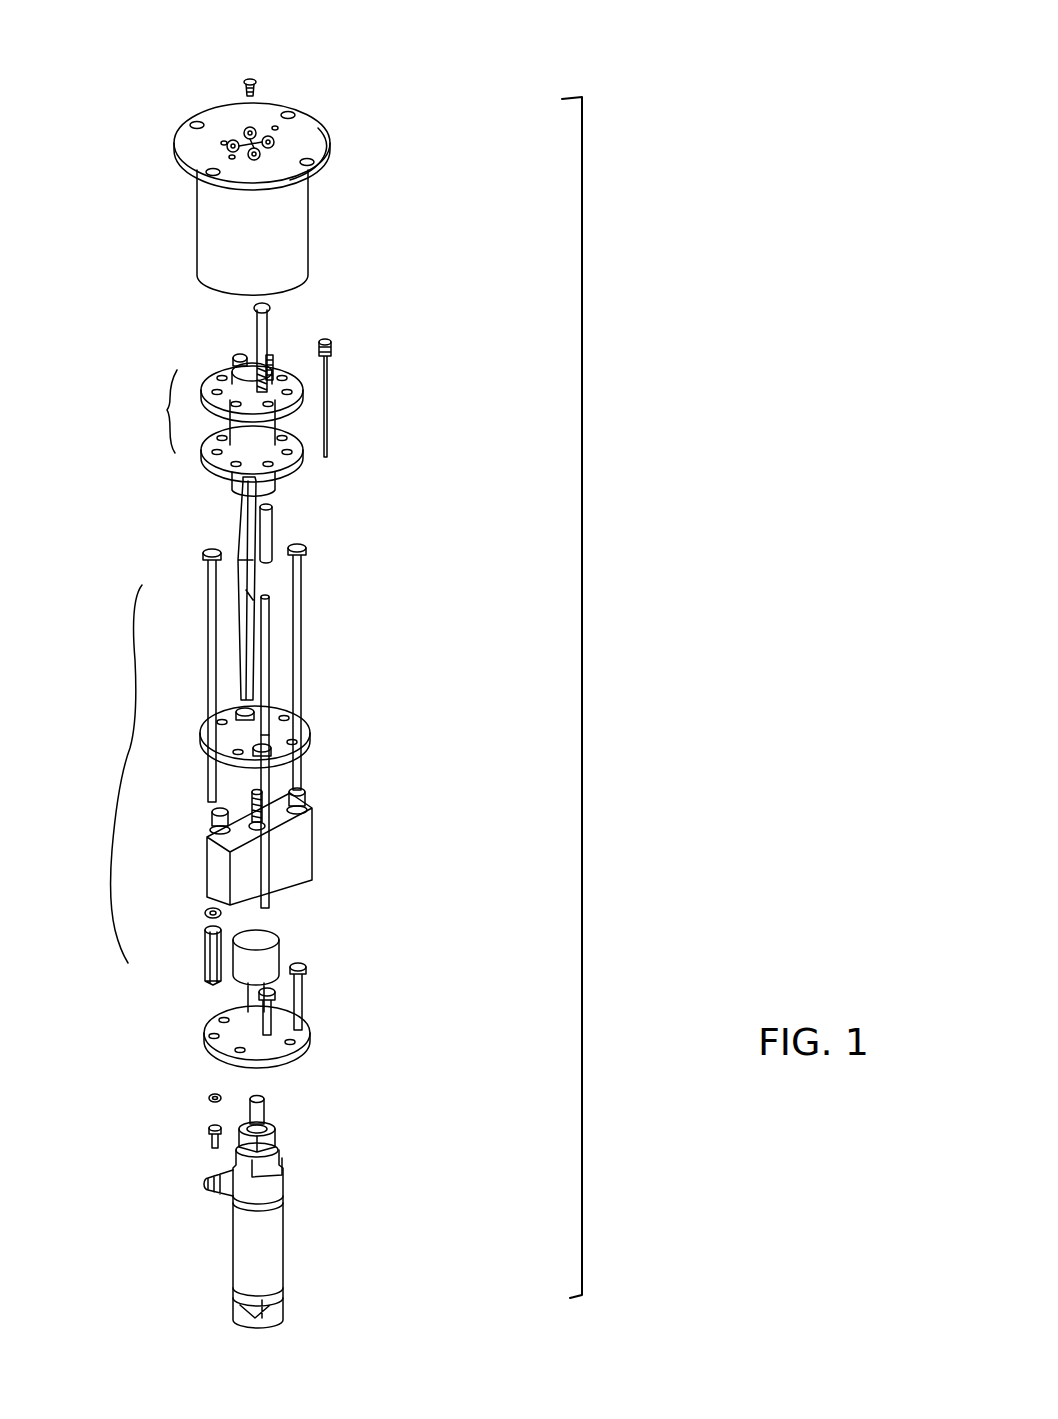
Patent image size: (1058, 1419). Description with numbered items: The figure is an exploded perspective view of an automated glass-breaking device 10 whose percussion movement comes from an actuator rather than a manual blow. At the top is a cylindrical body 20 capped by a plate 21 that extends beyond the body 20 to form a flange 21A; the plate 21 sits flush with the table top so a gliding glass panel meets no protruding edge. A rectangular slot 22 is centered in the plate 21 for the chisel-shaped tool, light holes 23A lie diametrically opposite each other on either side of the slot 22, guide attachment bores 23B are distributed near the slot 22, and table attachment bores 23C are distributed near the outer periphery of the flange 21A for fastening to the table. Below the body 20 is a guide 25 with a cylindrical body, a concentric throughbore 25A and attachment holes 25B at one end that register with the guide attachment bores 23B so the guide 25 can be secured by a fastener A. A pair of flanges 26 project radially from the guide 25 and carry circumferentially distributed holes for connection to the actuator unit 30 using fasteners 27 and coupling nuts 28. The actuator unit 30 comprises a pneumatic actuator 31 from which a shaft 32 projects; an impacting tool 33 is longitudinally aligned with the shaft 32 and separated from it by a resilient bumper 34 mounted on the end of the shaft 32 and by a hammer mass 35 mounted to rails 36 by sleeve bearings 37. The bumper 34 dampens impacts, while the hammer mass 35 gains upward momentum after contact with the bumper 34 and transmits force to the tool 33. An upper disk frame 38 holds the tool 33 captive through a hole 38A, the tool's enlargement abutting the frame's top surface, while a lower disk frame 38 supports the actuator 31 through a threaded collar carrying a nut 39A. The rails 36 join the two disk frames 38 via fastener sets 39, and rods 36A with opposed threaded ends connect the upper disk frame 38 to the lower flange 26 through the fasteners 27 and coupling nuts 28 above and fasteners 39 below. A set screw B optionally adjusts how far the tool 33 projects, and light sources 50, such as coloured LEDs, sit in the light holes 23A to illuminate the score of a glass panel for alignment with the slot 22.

The glass-breaking device 10 is at (584, 714).
The fastener A is at (252, 77).
The body 20 is at (308, 222).
The plate 21 is at (293, 150).
The flange 21A is at (330, 123).
The slot 22 is at (260, 133).
The light holes 23A is at (230, 160).
The guide attachment bores 23B is at (233, 127).
The table attachment bores 23C is at (200, 177).
The guide 25 is at (164, 408).
The throughbore 25A is at (237, 368).
The attachment holes 25B is at (280, 370).
The flanges 26 is at (203, 450).
The fasteners 27 is at (273, 310).
The coupling nuts 28 is at (273, 508).
The actuator unit 30 is at (130, 770).
The actuator 31 is at (284, 1162).
The shaft 32 is at (265, 1110).
The impacting tool 33 is at (233, 537).
The resilient bumper 34 is at (280, 940).
The hammer mass 35 is at (312, 840).
The rails 36 is at (272, 907).
The rods 36A is at (265, 635).
The bearings 37 is at (305, 800).
The disk frame 38 is at (308, 1030).
The hole 38A is at (252, 730).
The fastener sets 39 is at (207, 1142).
The nut 39A is at (277, 1128).
The light sources 50 is at (333, 345).
The set screw B is at (250, 800).